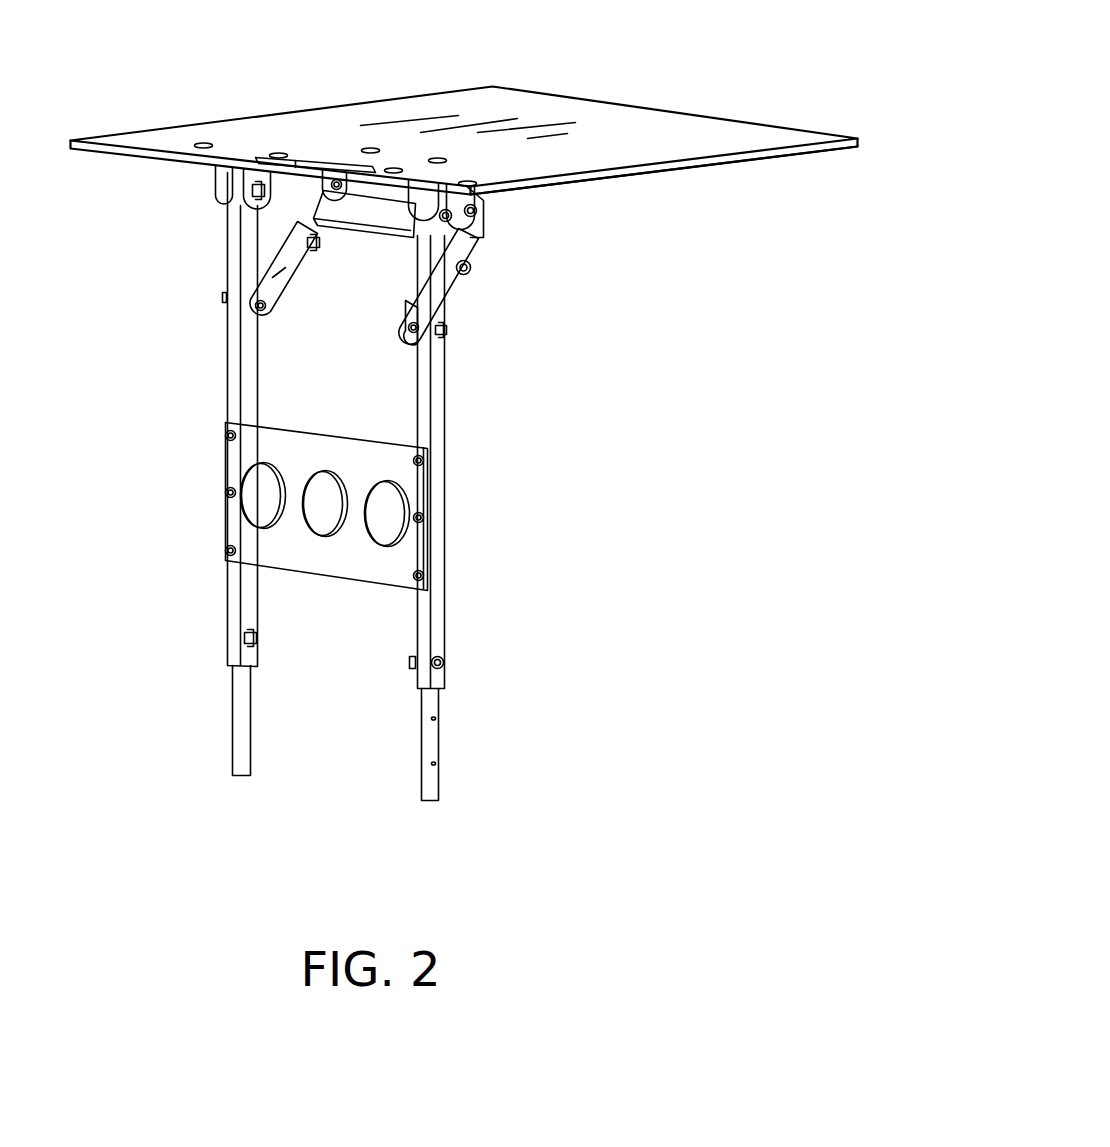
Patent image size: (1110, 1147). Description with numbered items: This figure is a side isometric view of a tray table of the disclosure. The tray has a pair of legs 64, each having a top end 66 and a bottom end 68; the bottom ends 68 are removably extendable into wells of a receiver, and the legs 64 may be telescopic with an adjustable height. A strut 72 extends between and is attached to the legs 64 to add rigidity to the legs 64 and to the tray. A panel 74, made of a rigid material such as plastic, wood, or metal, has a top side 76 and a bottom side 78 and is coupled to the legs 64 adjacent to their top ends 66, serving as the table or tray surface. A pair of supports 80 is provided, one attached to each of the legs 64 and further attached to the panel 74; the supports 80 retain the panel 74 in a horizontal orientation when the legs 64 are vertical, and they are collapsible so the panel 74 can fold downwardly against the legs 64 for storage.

The legs 64 is at (232, 382).
The top end 66 is at (228, 185).
The bottom end 68 is at (243, 777).
The strut 72 is at (352, 462).
The panel 74 is at (498, 88).
The top side 76 is at (658, 150).
The bottom side 78 is at (717, 170).
The supports 80 is at (283, 250).